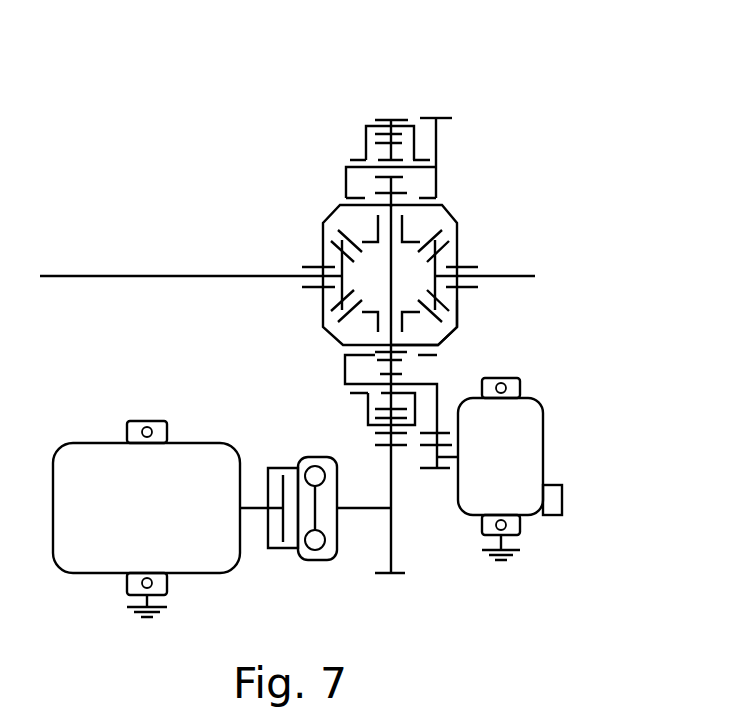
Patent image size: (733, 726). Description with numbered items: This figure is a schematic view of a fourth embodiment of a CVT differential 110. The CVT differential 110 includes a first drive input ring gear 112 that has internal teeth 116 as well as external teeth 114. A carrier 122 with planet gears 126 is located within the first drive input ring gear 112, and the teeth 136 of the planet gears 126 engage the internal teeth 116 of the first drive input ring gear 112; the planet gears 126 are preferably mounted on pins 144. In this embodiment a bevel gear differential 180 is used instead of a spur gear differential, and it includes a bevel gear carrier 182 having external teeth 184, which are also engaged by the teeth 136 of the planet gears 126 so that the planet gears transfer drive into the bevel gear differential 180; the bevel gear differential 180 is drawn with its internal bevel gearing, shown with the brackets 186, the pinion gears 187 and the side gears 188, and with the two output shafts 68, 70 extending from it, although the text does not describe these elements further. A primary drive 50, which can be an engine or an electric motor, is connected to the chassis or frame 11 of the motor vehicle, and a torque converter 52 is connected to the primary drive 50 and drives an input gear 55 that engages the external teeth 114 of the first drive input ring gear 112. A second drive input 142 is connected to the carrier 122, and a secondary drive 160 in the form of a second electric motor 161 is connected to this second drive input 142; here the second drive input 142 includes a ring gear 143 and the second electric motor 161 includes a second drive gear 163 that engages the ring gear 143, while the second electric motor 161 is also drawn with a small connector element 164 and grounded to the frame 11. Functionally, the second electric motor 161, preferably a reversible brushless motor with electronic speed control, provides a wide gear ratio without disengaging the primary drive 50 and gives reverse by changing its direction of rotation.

The CVT differential 110 is at (578, 160).
The teeth of the planet gears 136 is at (377, 135).
The ring gear 143 is at (427, 118).
The second drive input 142 is at (437, 133).
The carrier 122 is at (437, 150).
The pins 144 is at (410, 167).
The planet gears 126 is at (387, 152).
The external teeth of the bevel gear carrier 184 is at (375, 198).
The bevel gear differential 180 is at (461, 245).
The bevel gear carrier 182 is at (456, 322).
The pinion bearing bracket 186 is at (363, 243).
The differential pinion gears 187 is at (390, 293).
The side gears 188 is at (345, 292).
The left output shaft 68 is at (100, 276).
The right output shaft 70 is at (535, 276).
The internal teeth 116 is at (385, 413).
The first drive input ring gear 112 is at (375, 428).
The external teeth 114 is at (397, 436).
The input gear 55 is at (391, 555).
The second drive gear 163 is at (450, 470).
The primary drive 50 is at (70, 573).
The chassis or frame 11 is at (148, 620).
The torque converter 52 is at (300, 548).
The secondary drive 160 is at (569, 456).
The second electric motor 161 is at (537, 403).
The motor connector / inverter 164 is at (562, 500).